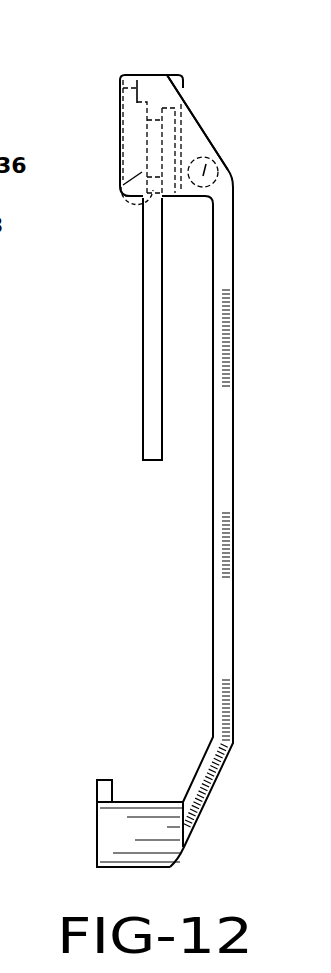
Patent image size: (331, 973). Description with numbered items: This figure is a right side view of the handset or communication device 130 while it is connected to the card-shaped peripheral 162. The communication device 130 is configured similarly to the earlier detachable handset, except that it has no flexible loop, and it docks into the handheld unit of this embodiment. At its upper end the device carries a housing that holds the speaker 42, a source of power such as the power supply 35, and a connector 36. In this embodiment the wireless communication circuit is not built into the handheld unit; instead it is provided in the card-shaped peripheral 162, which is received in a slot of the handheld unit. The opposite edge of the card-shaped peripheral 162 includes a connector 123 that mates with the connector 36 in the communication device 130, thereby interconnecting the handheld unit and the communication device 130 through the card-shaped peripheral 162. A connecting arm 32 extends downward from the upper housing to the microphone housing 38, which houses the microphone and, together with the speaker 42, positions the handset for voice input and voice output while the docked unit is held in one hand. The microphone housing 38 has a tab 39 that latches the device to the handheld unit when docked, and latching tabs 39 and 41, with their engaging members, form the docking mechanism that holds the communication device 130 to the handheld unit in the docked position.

The connecting arm 32 is at (225, 602).
The power supply 35 is at (212, 158).
The connector 36 is at (153, 190).
The microphone housing 38 is at (118, 838).
The tab 39 is at (103, 783).
The latching tab 41 is at (140, 198).
The speaker 42 is at (133, 73).
The connector 123 is at (155, 207).
The communication device 130 is at (203, 131).
The card-shaped peripheral 162 is at (151, 352).